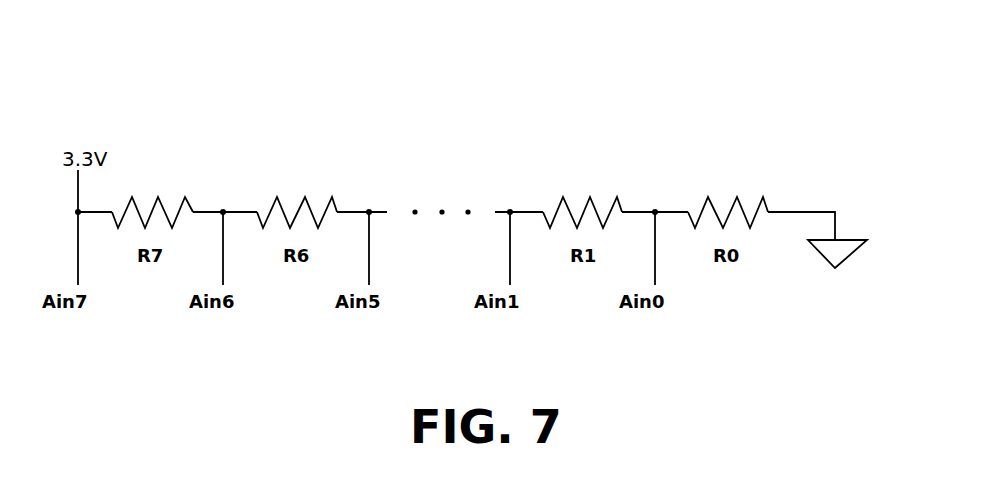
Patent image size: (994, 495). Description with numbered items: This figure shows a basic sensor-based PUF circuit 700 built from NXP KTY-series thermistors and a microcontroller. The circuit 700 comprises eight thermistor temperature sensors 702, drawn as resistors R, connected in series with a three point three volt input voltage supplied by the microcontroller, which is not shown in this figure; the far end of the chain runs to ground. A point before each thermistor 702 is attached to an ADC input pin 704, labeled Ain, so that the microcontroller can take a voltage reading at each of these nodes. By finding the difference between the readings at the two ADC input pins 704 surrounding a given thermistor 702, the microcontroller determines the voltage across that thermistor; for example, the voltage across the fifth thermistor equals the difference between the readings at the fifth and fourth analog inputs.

The sensor-based PUF circuit 700 is at (693, 92).
The thermistor temperature sensor 702 is at (158, 197).
The ADC input pin 704 is at (223, 212).